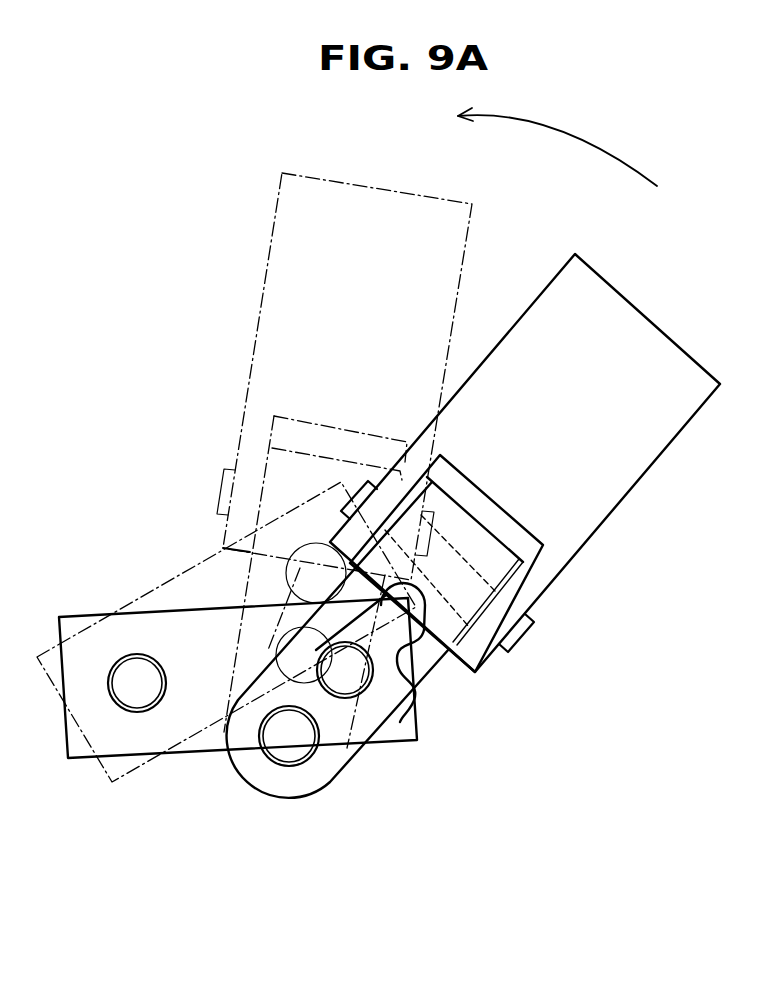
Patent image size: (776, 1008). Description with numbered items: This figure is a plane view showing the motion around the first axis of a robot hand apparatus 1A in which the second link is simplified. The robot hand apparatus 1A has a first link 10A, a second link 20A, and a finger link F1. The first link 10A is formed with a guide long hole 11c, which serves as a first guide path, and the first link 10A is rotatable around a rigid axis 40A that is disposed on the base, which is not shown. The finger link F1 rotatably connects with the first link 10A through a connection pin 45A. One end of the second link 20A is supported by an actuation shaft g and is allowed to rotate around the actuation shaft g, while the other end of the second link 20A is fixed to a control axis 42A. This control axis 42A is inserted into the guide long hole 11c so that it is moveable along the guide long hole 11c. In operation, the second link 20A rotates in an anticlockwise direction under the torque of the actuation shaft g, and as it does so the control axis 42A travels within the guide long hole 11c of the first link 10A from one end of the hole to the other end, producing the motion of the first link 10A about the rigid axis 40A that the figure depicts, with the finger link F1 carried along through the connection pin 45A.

The robot hand apparatus 1A is at (137, 377).
The finger link F1 is at (562, 295).
The first link 10A is at (492, 559).
The guide long hole 11c is at (403, 593).
The second link 20A is at (204, 745).
The rigid axis 40A is at (297, 752).
The control axis 42A is at (347, 672).
The connection pin 45A is at (517, 632).
The actuation shaft g is at (139, 681).